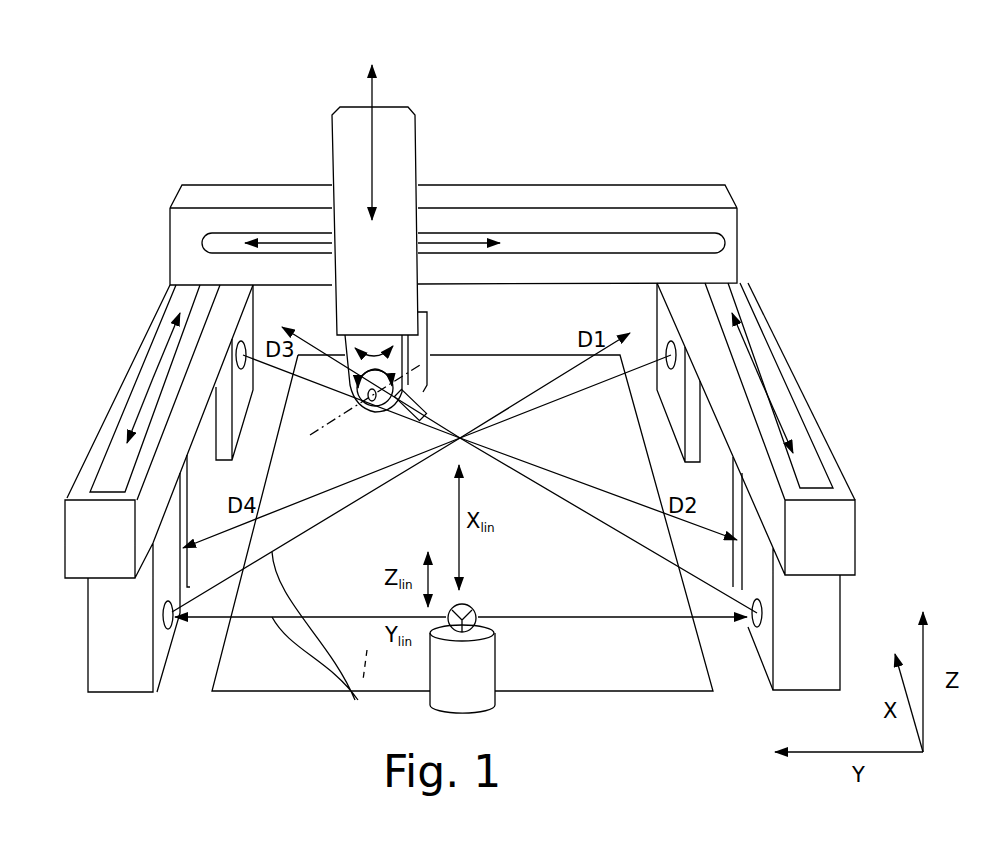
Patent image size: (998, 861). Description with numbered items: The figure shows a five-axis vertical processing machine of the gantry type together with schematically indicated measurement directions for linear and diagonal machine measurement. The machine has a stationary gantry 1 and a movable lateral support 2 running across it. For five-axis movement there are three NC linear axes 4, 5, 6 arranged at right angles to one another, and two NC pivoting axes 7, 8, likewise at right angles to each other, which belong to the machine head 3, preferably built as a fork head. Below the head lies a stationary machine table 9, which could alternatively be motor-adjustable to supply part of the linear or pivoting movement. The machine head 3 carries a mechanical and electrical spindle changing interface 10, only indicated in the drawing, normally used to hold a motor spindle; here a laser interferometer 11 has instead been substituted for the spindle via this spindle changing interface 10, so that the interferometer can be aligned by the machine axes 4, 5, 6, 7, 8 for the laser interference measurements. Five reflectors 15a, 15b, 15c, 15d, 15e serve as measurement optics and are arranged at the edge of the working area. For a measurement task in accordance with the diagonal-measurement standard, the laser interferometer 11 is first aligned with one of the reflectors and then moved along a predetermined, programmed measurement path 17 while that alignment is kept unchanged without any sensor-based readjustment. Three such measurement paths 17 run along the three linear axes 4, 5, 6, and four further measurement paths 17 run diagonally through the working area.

The stationary gantry 1 is at (770, 312).
The movable lateral support 2 is at (707, 198).
The machine head 3 is at (433, 322).
The NC linear axis 4 is at (140, 407).
The NC linear axis 5 is at (455, 243).
The NC linear axis 6 is at (366, 89).
The NC pivoting axis 7 is at (362, 340).
The NC pivoting axis 8 is at (397, 370).
The machine table 9 is at (268, 658).
The spindle changing interface 10 is at (422, 393).
The laser interferometer 11 is at (395, 405).
The reflector 15a is at (755, 628).
The reflector 15b is at (666, 350).
The reflector 15c is at (246, 369).
The reflector 15d is at (170, 629).
The reflector 15e is at (480, 622).
The measurement path 17 is at (323, 642).